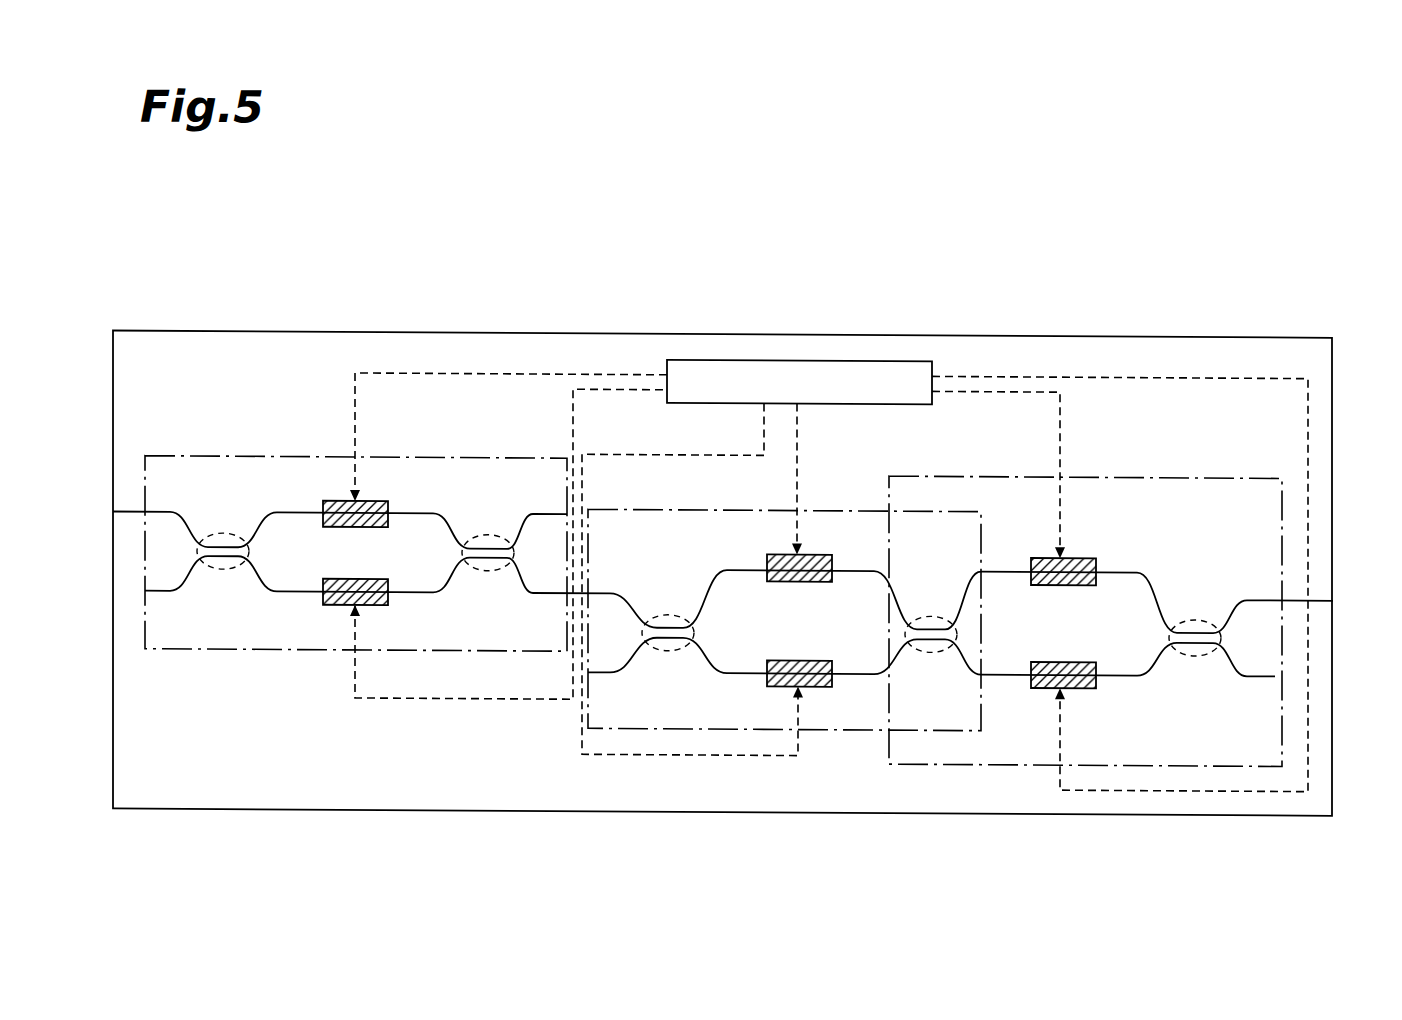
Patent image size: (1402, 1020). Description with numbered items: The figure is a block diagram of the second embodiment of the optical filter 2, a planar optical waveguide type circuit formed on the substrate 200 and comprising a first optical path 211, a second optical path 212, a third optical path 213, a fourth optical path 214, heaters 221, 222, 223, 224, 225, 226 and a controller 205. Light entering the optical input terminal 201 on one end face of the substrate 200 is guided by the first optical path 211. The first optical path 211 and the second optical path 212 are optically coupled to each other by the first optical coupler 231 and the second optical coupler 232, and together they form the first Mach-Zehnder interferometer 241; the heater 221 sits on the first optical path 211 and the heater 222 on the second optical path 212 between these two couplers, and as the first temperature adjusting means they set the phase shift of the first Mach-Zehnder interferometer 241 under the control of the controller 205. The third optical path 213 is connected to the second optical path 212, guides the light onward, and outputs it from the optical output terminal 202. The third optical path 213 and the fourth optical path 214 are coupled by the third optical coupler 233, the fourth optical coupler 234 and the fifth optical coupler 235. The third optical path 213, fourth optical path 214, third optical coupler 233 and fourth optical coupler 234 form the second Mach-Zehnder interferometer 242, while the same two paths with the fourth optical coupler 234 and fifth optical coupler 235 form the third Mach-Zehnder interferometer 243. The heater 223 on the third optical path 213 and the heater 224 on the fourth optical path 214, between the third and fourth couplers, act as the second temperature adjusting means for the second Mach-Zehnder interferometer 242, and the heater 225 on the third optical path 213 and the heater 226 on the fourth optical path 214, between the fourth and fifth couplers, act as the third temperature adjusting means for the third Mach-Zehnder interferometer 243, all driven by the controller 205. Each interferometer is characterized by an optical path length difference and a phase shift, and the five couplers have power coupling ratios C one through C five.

The optical filter 2 is at (1015, 273).
The substrate 200 is at (677, 333).
The optical input terminal 201 is at (113, 516).
The optical output terminal 202 is at (1333, 598).
The controller 205 is at (830, 360).
The first optical path 211 is at (300, 514).
The second optical path 212 is at (291, 596).
The third optical path 213 is at (742, 569).
The fourth optical path 214 is at (738, 675).
The heater 221 is at (372, 501).
The heater 222 is at (372, 608).
The heater 223 is at (808, 553).
The heater 224 is at (808, 687).
The heater 225 is at (1074, 555).
The heater 226 is at (1074, 687).
The first optical coupler 231 is at (212, 572).
The second optical coupler 232 is at (486, 572).
The third optical coupler 233 is at (655, 648).
The fourth optical coupler 234 is at (932, 651).
The fifth optical coupler 235 is at (1194, 653).
The first Mach-Zehnder interferometer 241 is at (278, 654).
The second Mach-Zehnder interferometer 242 is at (842, 509).
The third Mach-Zehnder interferometer 243 is at (998, 474).